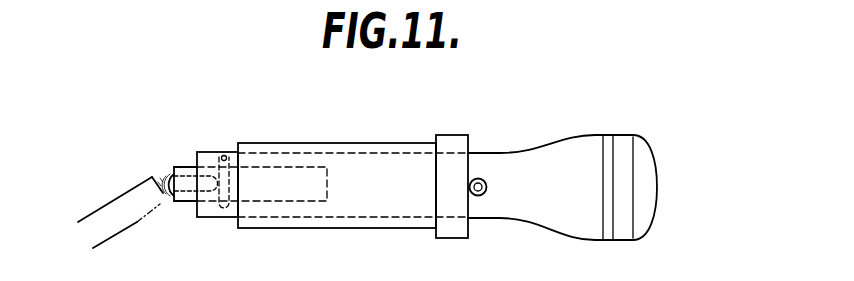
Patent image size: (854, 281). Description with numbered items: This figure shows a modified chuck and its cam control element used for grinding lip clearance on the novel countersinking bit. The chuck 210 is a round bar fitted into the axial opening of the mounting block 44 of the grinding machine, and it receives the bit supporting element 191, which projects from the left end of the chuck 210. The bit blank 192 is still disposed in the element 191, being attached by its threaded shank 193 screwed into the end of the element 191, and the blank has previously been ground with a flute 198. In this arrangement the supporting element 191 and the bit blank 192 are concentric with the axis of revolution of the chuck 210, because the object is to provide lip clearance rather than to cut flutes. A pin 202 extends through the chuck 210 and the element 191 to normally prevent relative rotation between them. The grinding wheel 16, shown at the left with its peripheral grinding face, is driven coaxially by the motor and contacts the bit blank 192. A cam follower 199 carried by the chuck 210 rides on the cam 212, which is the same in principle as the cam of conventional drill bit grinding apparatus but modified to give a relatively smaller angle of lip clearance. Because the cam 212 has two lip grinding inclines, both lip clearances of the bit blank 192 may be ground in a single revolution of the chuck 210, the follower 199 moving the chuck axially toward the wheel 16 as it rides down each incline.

The grinding wheel 16 is at (122, 196).
The mounting block 44 is at (302, 143).
The bit supporting element 191 is at (188, 163).
The bit blank 192 is at (173, 165).
The threaded shank 193 is at (178, 204).
The flute 198 is at (169, 200).
The cam follower 199 is at (485, 180).
The pin 202 is at (226, 157).
The chuck 210 is at (217, 154).
The cam 212 is at (455, 135).